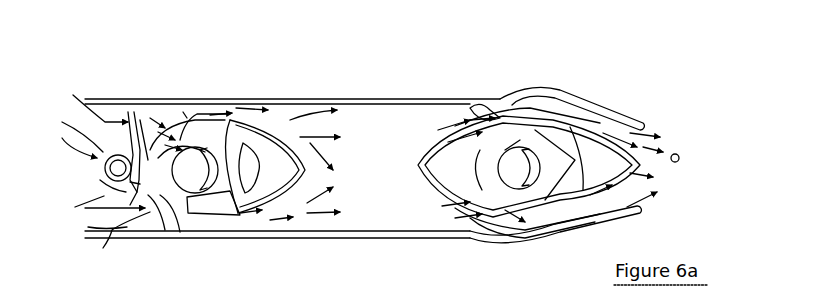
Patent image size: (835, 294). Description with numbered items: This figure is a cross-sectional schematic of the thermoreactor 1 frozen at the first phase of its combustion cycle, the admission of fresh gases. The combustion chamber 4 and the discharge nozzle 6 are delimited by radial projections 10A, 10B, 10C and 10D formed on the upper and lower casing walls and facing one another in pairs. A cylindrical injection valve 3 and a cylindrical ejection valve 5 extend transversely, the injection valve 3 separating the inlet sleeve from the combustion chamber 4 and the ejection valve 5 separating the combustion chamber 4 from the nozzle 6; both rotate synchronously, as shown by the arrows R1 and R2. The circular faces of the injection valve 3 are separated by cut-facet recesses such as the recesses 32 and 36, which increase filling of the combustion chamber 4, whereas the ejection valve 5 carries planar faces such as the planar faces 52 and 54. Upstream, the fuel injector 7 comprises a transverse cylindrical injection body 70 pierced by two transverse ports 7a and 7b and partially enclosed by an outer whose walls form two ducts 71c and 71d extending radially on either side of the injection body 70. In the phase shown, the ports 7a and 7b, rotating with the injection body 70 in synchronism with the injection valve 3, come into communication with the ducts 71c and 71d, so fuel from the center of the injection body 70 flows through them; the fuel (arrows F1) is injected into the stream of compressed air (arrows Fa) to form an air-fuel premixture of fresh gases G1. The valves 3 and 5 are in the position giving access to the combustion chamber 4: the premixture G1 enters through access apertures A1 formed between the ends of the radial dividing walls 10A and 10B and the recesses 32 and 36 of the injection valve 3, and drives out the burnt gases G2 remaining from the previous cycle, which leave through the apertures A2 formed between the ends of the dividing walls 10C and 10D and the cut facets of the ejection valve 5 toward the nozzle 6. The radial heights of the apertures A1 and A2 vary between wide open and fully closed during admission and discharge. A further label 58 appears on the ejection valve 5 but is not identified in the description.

The thermoreactor 1 is at (407, 98).
The injection valve 3 is at (133, 140).
The combustion chamber 4 is at (376, 180).
The ejection valve 5 is at (548, 212).
The discharge nozzle 6 is at (622, 125).
The fuel injector 7 is at (73, 141).
The transverse port 7a is at (71, 129).
The transverse port 7b is at (134, 174).
The radial projection 10A is at (183, 134).
The radial projection 10B is at (182, 228).
The radial projection 10C is at (475, 108).
The radial projection 10D is at (515, 232).
The recess 32 is at (228, 118).
The recess 36 is at (240, 222).
The planar face 52 is at (498, 164).
The planar face 54 is at (589, 233).
The turbine blade 58 is at (535, 215).
The cylindrical injection body 70 is at (104, 167).
The duct 71c is at (124, 154).
The duct 71d is at (118, 187).
The access aperture A1 is at (185, 115).
The access aperture A2 is at (522, 166).
The fuel injection arrows F1 is at (117, 153).
The stream of compressed air Fa is at (101, 170).
The premixture of fresh gases G1 is at (176, 117).
The burnt gases G2 is at (448, 138).
The rotation arrow R1 is at (220, 130).
The rotation arrow R2 is at (535, 148).